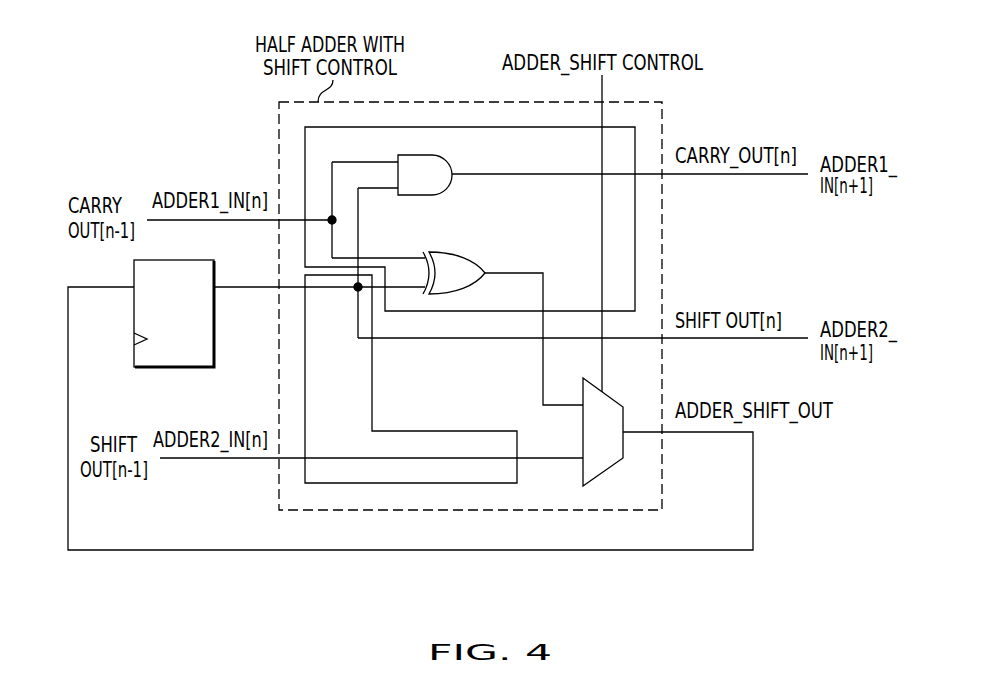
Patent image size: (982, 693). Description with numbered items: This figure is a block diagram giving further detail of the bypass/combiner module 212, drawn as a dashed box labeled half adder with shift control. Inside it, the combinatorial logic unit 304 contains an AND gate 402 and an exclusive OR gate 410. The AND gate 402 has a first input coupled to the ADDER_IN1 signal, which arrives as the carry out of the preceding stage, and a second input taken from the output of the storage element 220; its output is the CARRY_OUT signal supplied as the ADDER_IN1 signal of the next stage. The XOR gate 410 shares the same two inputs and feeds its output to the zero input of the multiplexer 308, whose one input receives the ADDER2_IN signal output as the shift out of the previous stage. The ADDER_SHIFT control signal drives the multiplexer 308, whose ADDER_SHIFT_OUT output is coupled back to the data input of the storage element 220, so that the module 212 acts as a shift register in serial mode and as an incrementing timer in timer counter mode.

The bypass/combiner module 212 is at (662, 207).
The combinatorial logic unit 304 is at (636, 266).
The AND gate 402 is at (418, 196).
The exclusive OR (XOR) gate 410 is at (470, 253).
The multiplexer 308 is at (613, 393).
The storage element 220 is at (192, 331).